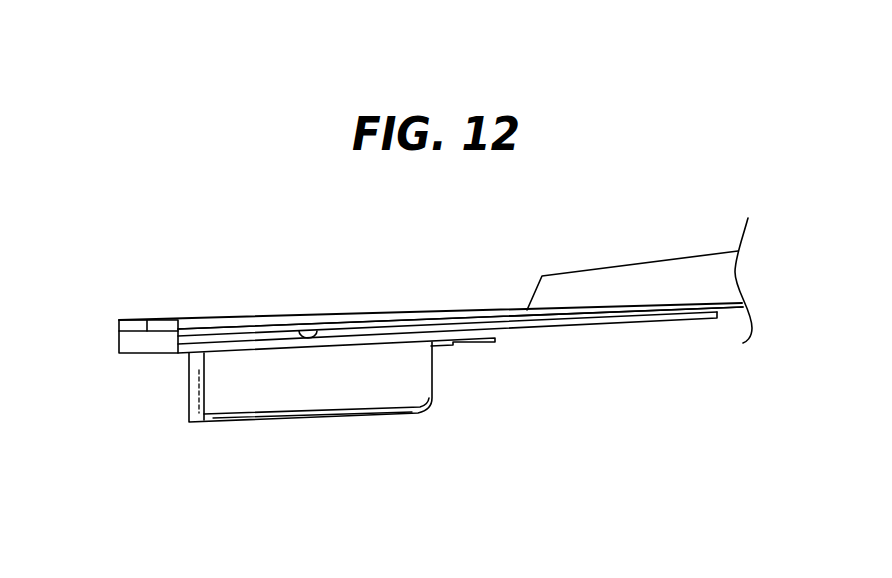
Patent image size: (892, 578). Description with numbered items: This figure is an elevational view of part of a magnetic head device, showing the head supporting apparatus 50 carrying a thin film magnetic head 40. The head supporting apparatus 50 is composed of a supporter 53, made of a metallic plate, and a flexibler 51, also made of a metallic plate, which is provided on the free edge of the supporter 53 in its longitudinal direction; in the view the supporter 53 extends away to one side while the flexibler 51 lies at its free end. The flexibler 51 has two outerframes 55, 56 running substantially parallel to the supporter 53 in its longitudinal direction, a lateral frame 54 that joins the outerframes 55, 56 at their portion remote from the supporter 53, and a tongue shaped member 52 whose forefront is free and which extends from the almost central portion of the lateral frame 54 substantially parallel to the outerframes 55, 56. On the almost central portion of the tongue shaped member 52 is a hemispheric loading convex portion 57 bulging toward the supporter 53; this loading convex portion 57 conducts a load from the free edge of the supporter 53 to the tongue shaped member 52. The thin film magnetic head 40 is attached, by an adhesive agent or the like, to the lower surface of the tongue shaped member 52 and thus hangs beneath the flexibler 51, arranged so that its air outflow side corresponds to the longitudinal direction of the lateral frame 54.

The thin film magnetic head 40 is at (300, 437).
The head supporting apparatus 50 is at (485, 296).
The flexibler 51 is at (139, 366).
The tongue shaped member 52 is at (452, 340).
The supporter 53 is at (389, 318).
The lateral frame 54 is at (147, 338).
The outerframe 55 is at (217, 331).
The outerframe 56 is at (217, 331).
The loading convex portion 57 is at (308, 332).